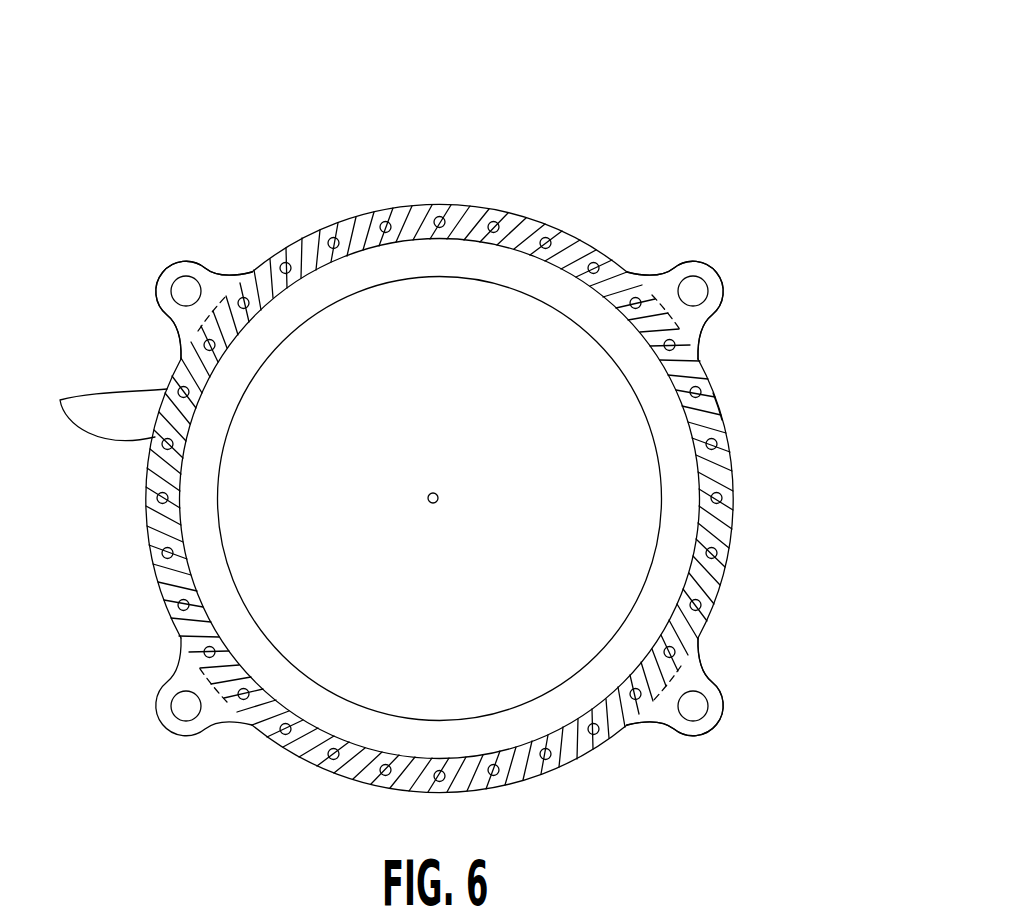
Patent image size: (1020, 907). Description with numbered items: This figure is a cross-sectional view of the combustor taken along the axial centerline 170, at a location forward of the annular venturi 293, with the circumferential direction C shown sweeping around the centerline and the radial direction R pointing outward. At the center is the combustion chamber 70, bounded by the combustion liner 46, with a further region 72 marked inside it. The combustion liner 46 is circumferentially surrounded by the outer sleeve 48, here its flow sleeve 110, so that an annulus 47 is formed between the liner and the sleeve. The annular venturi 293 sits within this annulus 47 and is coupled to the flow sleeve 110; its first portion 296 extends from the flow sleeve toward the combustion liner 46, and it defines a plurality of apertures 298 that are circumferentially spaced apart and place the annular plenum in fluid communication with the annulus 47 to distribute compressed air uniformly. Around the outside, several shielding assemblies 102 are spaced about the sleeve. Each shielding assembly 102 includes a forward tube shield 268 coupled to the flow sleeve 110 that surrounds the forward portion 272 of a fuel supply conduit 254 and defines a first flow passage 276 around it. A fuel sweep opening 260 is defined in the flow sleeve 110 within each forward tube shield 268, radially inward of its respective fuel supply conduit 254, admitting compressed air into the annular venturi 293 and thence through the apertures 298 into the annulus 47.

The combustion liner 46 is at (253, 613).
The annulus 47 is at (449, 243).
The outer sleeve 48 is at (403, 207).
The combustion chamber 70 is at (473, 608).
The upper region 72 is at (455, 375).
The shielding assembly 102 is at (727, 722).
The flow sleeve 110 is at (525, 781).
The axial centerline 170 is at (440, 498).
The fuel supply conduit 254 is at (713, 307).
The fuel sweep opening 260 is at (680, 272).
The forward tube shield 268 is at (666, 274).
The forward portion of the fuel supply conduit 272 is at (713, 307).
The first flow passage 276 is at (723, 280).
The annular venturi 293 is at (715, 523).
The first portion of the annular venturi 296 is at (703, 399).
The apertures 298 is at (102, 402).
The circumferential direction C is at (390, 35).
The radial direction R is at (907, 280).